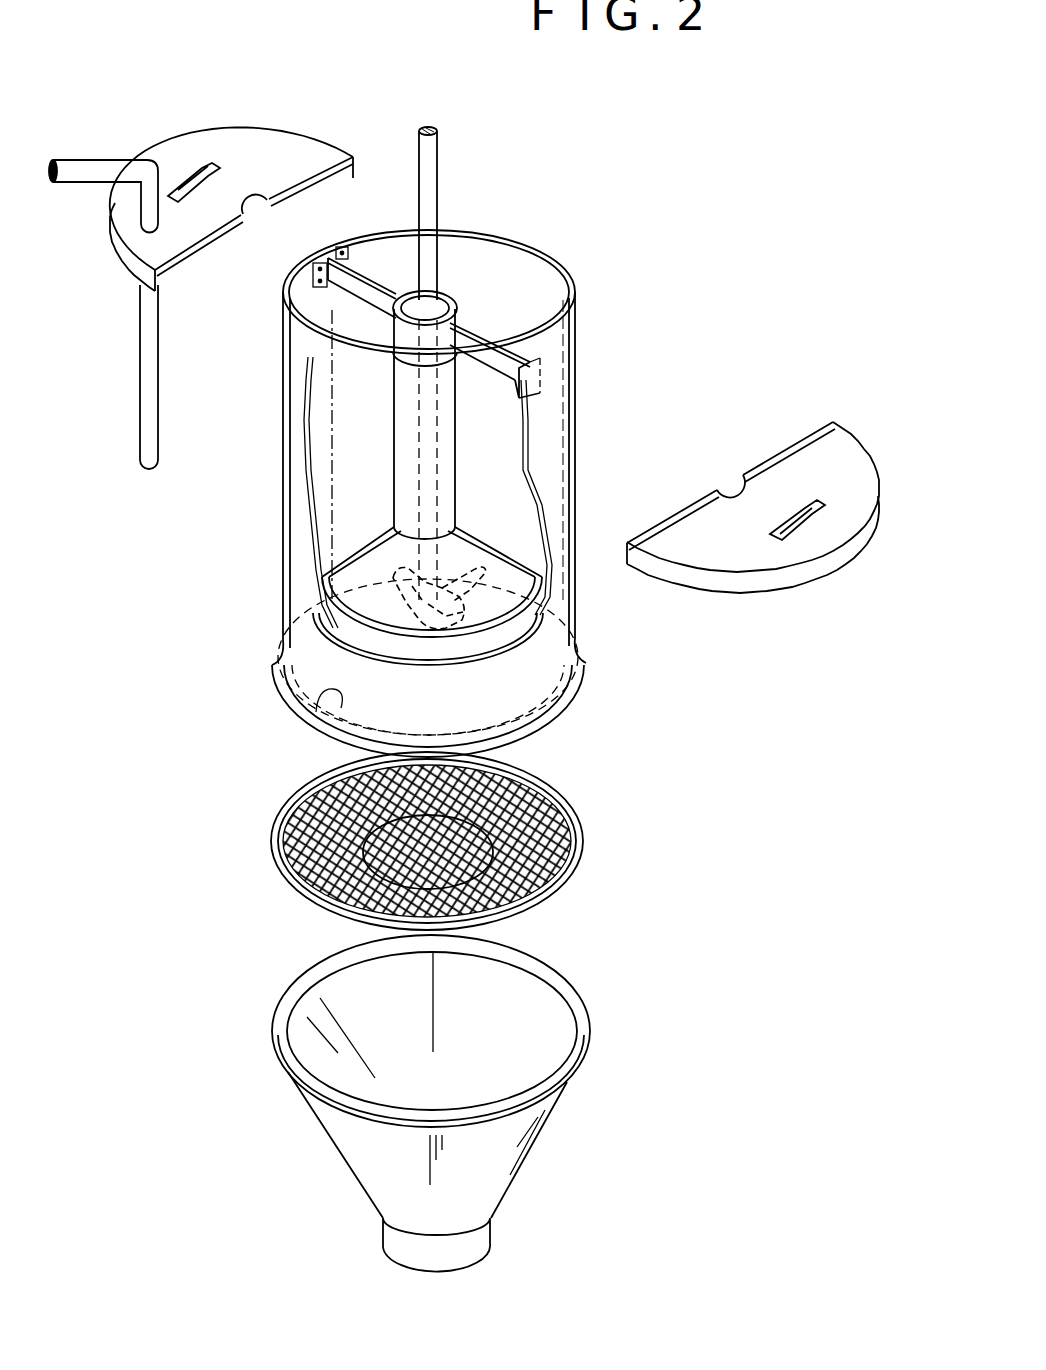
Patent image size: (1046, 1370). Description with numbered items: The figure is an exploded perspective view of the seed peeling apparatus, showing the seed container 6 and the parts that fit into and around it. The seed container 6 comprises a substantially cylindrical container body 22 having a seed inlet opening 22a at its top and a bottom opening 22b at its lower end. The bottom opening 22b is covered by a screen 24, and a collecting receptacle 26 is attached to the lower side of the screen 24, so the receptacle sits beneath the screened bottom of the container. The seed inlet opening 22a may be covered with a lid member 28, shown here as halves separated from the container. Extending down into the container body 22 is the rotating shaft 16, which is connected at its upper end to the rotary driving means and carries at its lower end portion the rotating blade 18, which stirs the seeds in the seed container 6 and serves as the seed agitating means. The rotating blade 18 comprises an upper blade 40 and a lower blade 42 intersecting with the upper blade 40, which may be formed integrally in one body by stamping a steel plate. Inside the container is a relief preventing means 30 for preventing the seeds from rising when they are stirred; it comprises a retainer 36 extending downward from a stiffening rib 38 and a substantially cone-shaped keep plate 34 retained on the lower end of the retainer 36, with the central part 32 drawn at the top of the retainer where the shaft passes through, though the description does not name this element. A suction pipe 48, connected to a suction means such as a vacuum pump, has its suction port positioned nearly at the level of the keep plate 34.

The seed container 6 is at (293, 483).
The rotating shaft 16 is at (432, 163).
The rotating blade 18 is at (387, 600).
The container body 22 is at (566, 453).
The seed inlet opening 22a is at (306, 300).
The bottom opening 22b is at (320, 697).
The screen 24 is at (585, 837).
The collecting receptacle 26 is at (585, 1027).
The lid member 28 is at (268, 152).
The relief preventing means 30 is at (466, 463).
The hub 32 is at (445, 297).
The keep plate 34 is at (493, 567).
The retainer 36 is at (502, 347).
The stiffening rib 38 is at (365, 273).
The upper blade 40 is at (470, 618).
The lower blade 42 is at (455, 572).
The suction pipe 48 is at (102, 170).